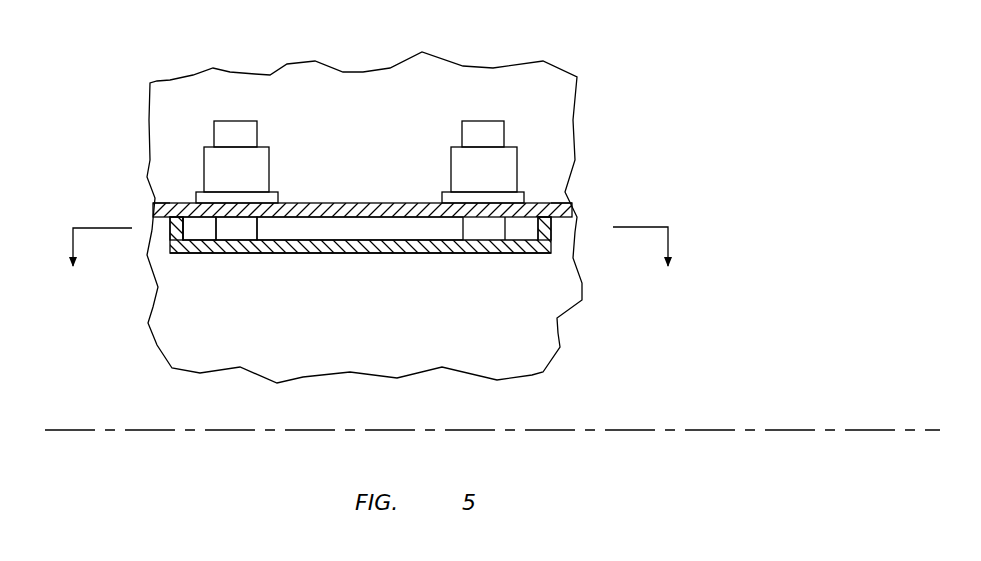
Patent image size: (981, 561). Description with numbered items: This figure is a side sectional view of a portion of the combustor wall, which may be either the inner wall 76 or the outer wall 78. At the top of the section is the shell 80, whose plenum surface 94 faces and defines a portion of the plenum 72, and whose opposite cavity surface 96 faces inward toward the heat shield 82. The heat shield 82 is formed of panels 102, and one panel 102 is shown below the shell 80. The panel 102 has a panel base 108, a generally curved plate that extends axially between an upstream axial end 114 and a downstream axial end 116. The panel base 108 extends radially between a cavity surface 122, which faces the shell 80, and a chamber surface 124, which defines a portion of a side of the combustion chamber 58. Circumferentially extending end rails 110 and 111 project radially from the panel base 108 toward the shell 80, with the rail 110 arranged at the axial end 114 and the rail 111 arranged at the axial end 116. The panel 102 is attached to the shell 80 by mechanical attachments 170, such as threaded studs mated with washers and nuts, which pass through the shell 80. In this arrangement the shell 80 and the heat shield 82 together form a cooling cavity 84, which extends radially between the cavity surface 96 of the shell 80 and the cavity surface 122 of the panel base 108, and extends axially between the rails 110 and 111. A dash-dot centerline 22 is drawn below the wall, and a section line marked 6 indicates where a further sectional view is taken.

The inner wall 76 is at (465, 200).
The outer wall 78 is at (465, 200).
The plenum 72 is at (364, 109).
The combustion chamber 58 is at (408, 356).
The mechanical attachments 170 is at (200, 129).
The shell 80 is at (359, 229).
The plenum surface 94 is at (302, 202).
The circumferentially extending end rail 110 is at (153, 218).
The circumferentially extending end rail 111 is at (553, 218).
The cavity surface 122 is at (385, 240).
The chamber surface 124 is at (358, 239).
The upstream axial end 114 is at (170, 246).
The downstream axial end 116 is at (552, 243).
The panel base 108 is at (257, 254).
The cavity surface 96 is at (307, 218).
The cooling cavity 84 is at (352, 228).
The heat shield 82 is at (360, 305).
The panel 102 is at (442, 262).
The engine centerline axis 22 is at (698, 428).
The section line 6- 6 is at (371, 262).